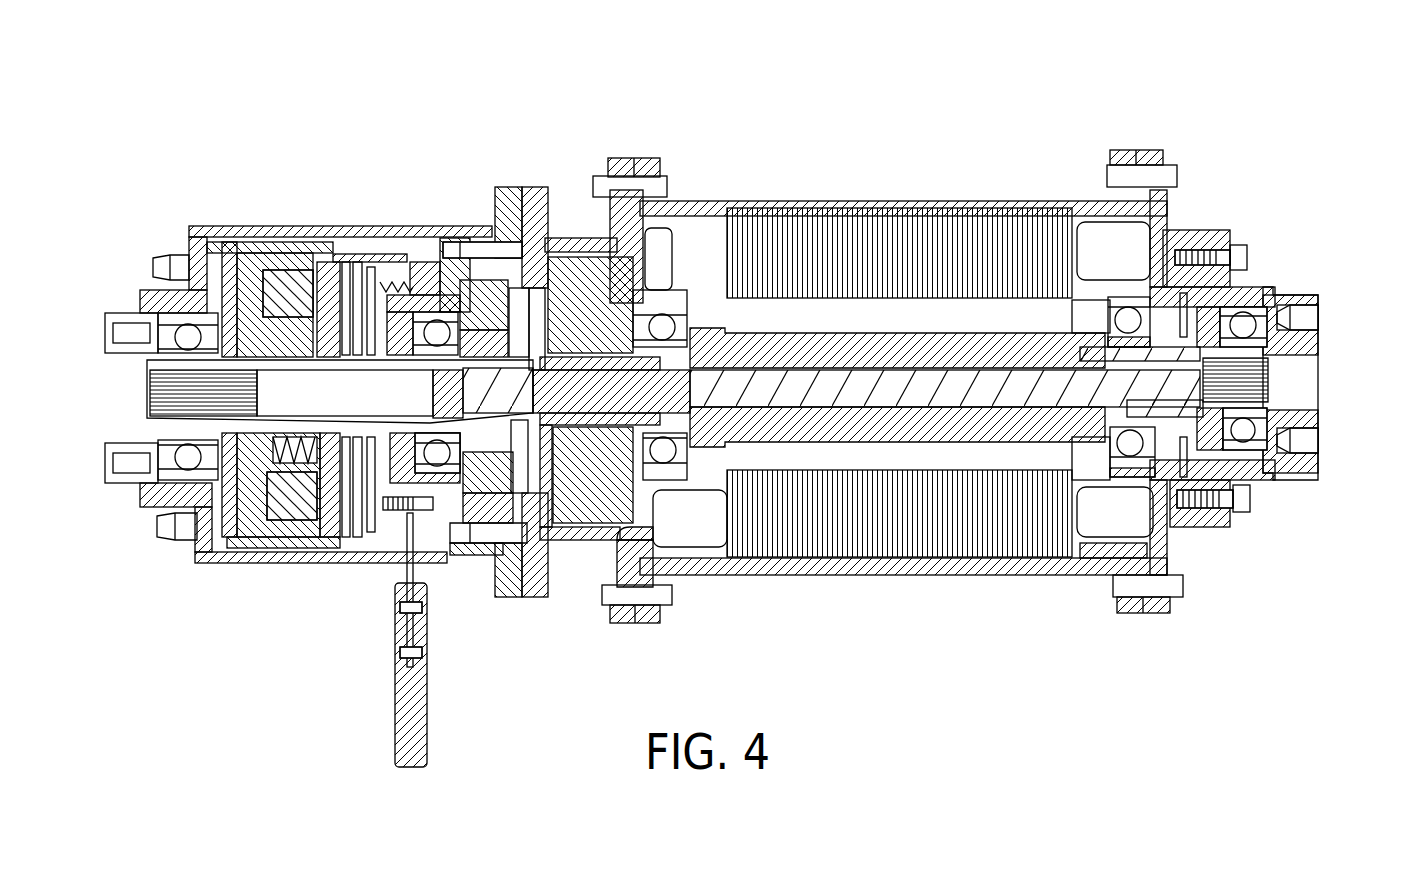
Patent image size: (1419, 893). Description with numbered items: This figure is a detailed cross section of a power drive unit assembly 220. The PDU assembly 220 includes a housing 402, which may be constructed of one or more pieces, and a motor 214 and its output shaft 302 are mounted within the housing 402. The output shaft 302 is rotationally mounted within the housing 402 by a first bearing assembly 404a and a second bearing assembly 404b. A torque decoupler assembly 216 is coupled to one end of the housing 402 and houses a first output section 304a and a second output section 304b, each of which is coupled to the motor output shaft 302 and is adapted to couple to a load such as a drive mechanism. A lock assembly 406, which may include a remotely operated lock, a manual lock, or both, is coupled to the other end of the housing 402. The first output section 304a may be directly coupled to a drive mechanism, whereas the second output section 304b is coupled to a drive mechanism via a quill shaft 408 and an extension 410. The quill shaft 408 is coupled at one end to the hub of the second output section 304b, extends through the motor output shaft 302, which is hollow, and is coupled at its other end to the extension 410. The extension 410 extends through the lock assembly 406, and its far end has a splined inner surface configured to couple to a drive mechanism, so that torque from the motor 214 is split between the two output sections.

The power drive unit assembly 220 is at (724, 143).
The first bearing assembly 404a is at (660, 300).
The extension 410 is at (490, 358).
The motor 214 is at (775, 210).
The housing 402 is at (840, 205).
The output shaft 302 is at (968, 337).
The second bearing assembly 404b is at (1178, 262).
The torque decoupler assembly 216 is at (1275, 272).
The first output section 304a is at (1262, 383).
The second output section 304b is at (1230, 440).
The quill shaft 408 is at (887, 395).
The lock assembly 406 is at (344, 570).